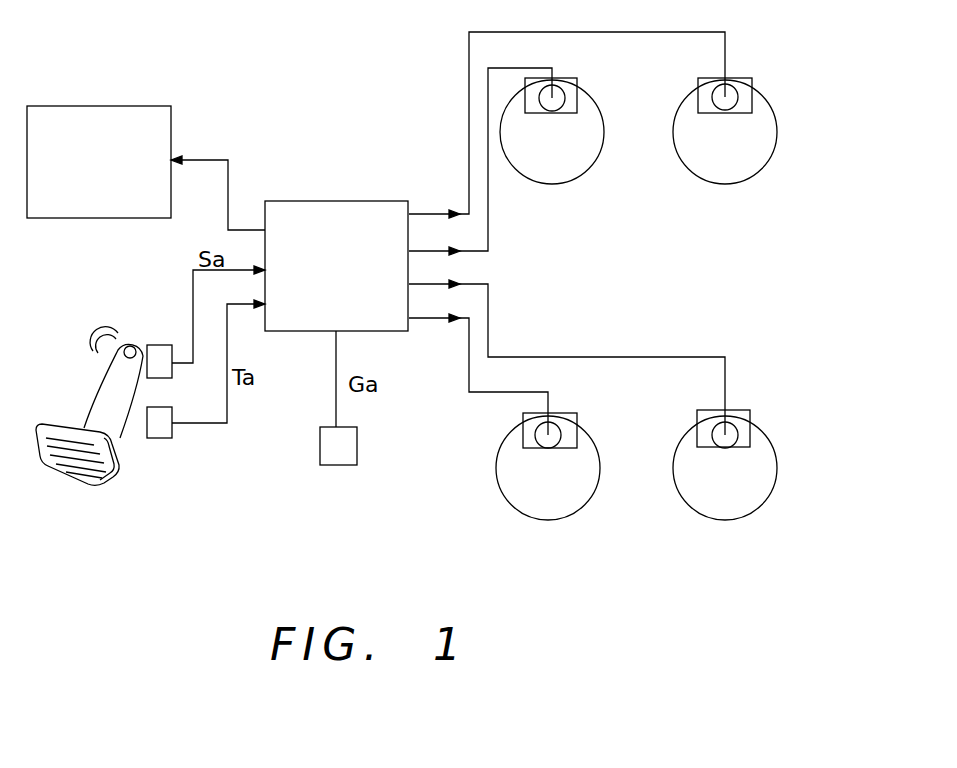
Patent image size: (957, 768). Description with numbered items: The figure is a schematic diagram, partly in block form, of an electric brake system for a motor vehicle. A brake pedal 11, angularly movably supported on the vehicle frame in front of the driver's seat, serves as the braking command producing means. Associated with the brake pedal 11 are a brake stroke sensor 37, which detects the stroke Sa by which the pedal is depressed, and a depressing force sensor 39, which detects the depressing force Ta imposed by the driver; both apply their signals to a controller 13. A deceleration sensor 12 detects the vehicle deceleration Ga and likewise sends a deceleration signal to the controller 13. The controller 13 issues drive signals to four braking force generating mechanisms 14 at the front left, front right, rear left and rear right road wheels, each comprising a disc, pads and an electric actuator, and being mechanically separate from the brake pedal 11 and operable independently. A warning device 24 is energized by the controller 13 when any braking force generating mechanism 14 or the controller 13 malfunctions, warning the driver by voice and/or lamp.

The brake pedal 11 is at (58, 425).
The deceleration sensor 12 is at (348, 450).
The controller 13 is at (337, 216).
The braking force generating mechanisms 14 is at (601, 93).
The warning device 24 is at (146, 120).
The brake stroke sensor 37 is at (162, 345).
The depressing force sensor 39 is at (165, 440).